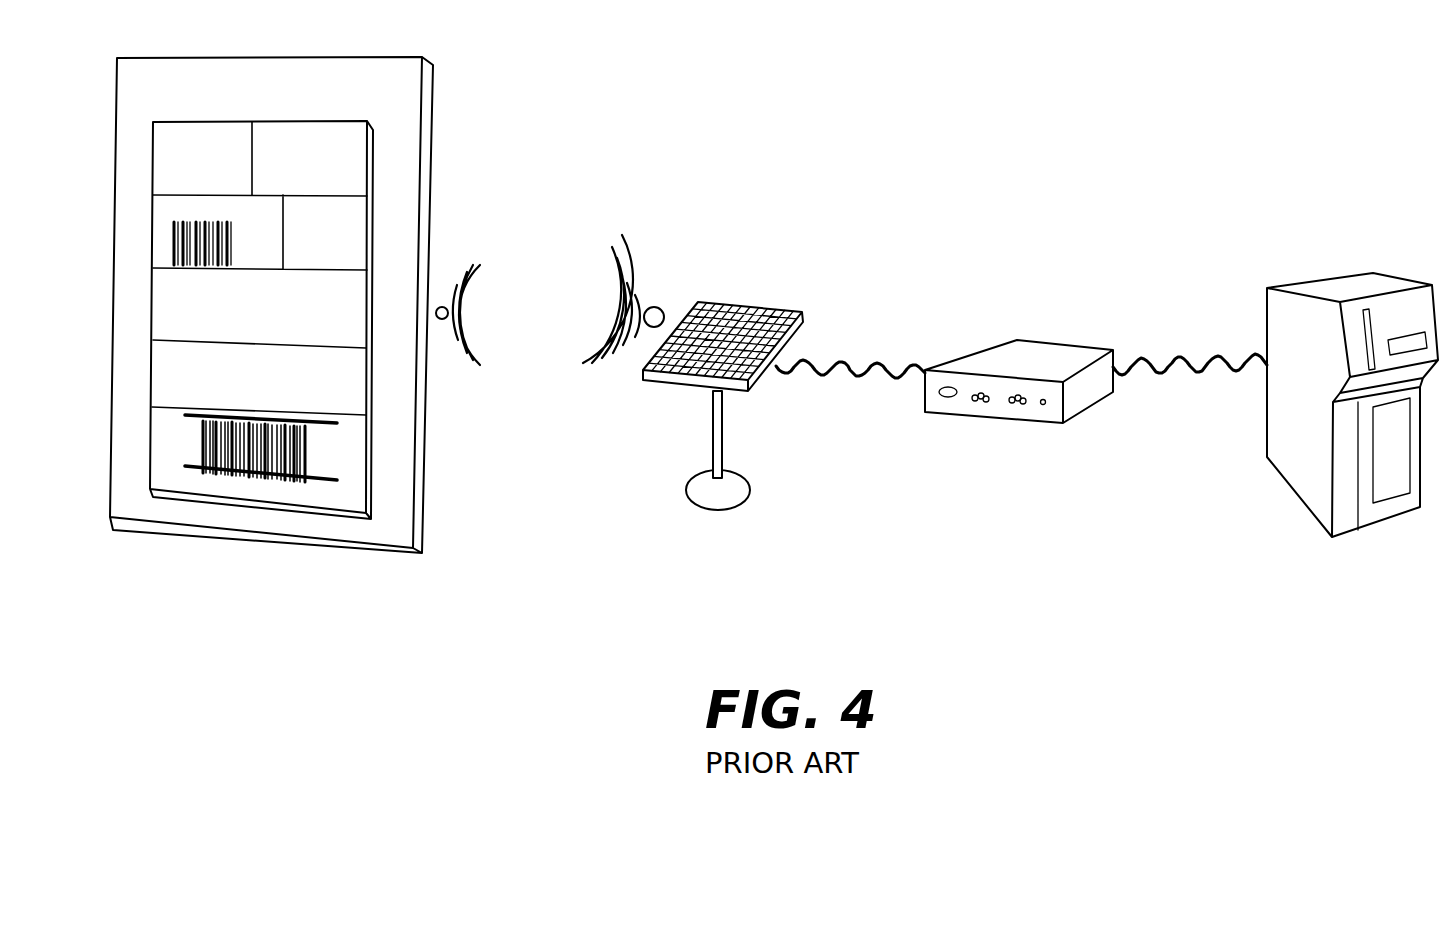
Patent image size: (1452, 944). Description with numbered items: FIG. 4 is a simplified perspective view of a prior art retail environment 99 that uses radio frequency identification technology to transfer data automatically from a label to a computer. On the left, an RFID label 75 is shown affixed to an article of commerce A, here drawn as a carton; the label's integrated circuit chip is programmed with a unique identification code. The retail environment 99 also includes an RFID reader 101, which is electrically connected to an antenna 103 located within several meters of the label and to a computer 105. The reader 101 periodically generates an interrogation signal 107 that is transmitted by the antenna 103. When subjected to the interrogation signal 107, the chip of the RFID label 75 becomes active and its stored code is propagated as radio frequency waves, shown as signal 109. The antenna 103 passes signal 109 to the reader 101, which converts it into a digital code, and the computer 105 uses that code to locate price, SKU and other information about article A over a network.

The article of commerce A is at (392, 458).
The RFID label 75 is at (292, 445).
The propagated signal 109 is at (497, 285).
The interrogation signal 107 is at (597, 253).
The antenna 103 is at (723, 436).
The RFID reader 101 is at (1080, 388).
The computer 105 is at (1300, 462).
The retail environment 99 is at (1136, 635).